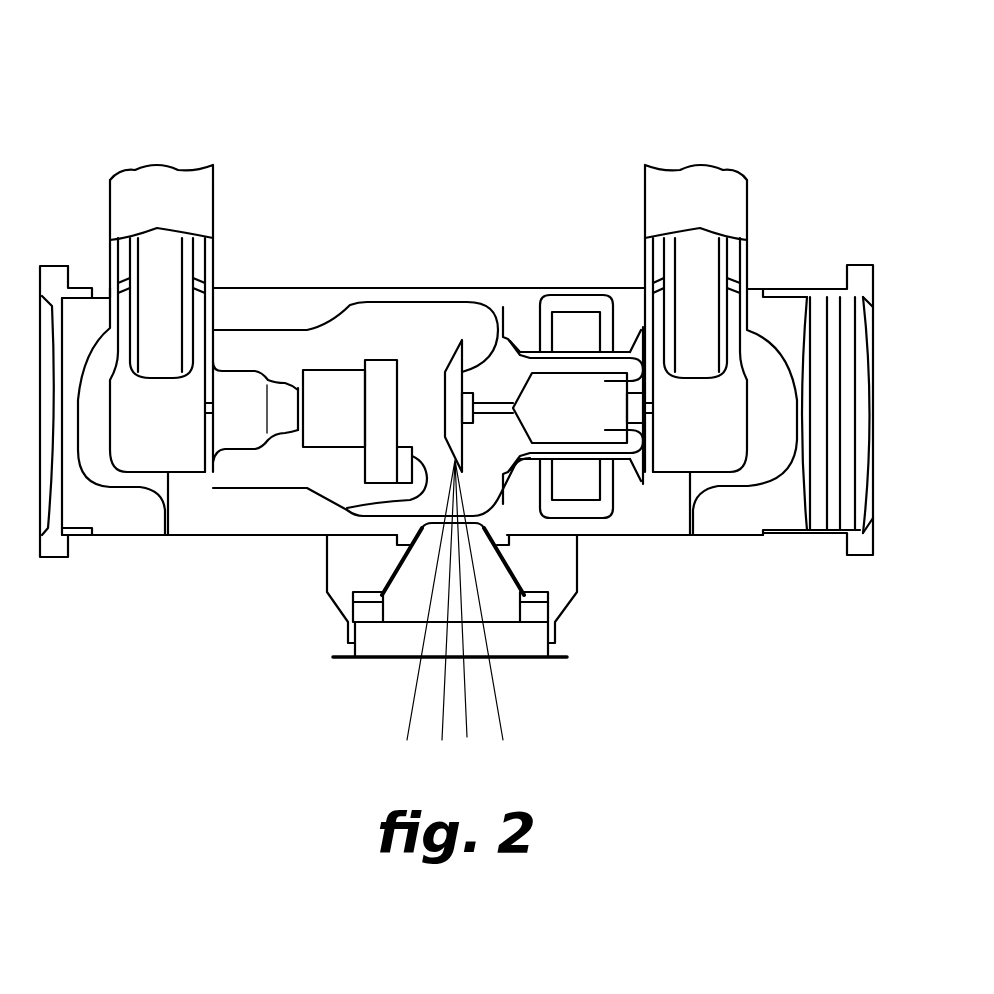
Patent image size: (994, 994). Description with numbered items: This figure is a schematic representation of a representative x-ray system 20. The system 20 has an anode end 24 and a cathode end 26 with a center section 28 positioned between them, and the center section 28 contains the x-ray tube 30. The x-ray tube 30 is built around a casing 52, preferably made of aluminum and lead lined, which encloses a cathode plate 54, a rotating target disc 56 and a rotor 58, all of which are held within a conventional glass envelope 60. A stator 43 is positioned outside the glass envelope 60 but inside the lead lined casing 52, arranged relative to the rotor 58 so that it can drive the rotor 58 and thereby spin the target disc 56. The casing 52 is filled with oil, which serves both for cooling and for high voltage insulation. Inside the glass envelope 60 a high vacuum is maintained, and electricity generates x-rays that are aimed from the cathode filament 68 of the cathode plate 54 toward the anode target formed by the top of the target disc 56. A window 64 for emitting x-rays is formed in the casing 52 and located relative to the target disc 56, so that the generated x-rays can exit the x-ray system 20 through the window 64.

The x-ray system 20 is at (427, 126).
The anode end 24 is at (746, 350).
The cathode end 26 is at (230, 470).
The center section 28 is at (454, 380).
The x-ray tube 30 is at (410, 292).
The stator 43 is at (578, 303).
The casing 52 is at (258, 289).
The cathode plate 54 is at (410, 365).
The rotating target disc 56 is at (465, 322).
The rotor 58 is at (587, 427).
The glass envelope 60 is at (320, 338).
The window 64 is at (512, 650).
The cathode filament 68 is at (347, 508).